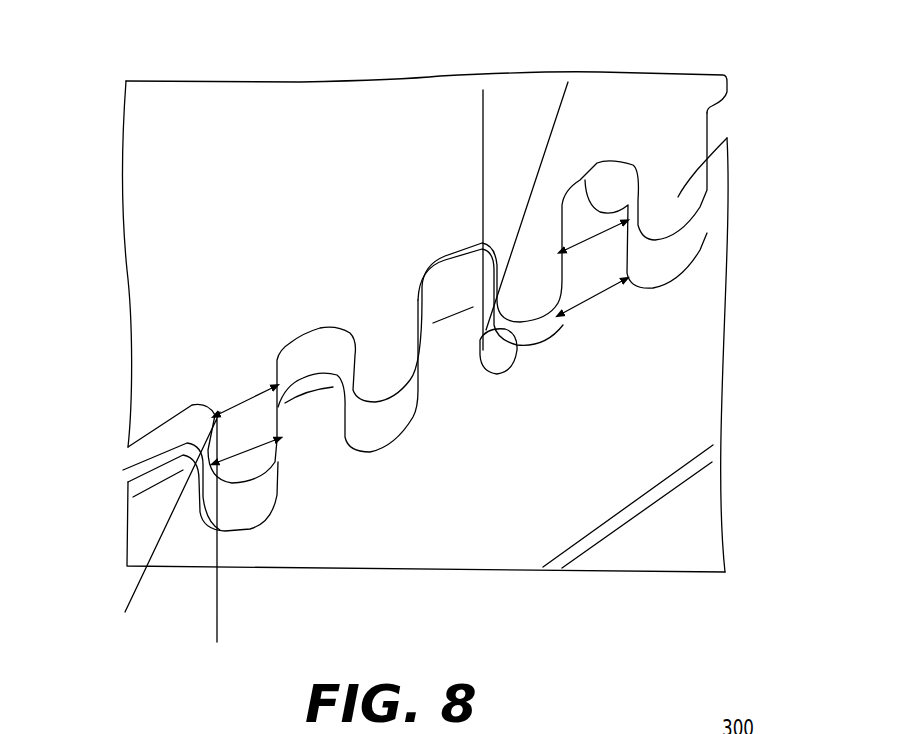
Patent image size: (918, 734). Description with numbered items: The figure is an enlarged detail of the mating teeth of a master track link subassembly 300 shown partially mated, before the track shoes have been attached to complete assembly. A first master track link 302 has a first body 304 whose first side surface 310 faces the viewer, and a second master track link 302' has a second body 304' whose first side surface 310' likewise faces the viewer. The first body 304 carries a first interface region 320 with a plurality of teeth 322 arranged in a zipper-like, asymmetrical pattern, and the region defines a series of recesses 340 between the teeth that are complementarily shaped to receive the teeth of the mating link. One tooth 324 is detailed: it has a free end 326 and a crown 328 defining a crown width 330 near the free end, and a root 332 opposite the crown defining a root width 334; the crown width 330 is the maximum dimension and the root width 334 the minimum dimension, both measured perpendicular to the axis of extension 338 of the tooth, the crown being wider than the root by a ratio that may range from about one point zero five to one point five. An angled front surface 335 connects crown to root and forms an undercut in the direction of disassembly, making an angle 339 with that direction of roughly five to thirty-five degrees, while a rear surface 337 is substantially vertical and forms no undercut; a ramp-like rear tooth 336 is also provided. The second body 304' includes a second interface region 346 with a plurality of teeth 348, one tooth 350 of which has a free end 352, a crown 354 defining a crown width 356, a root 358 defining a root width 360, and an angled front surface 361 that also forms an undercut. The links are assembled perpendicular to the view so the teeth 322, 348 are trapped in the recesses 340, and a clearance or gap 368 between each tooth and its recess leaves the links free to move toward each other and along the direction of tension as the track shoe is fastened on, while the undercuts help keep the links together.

The master track link subassembly 300 is at (471, 57).
The first master track link 302 is at (252, 226).
The first body 304 is at (426, 291).
The first side surface 310 is at (351, 164).
The first side surface 310' is at (628, 506).
The first interface region 320 is at (122, 186).
The plurality of teeth 322 is at (413, 333).
The tooth 324 is at (218, 410).
The free end 326 is at (230, 482).
The crown 328 is at (278, 495).
The crown width 330 is at (247, 465).
The root 332 is at (291, 343).
The root width 334 is at (278, 410).
The angled front surface 335 is at (123, 470).
The rear tooth 336 is at (137, 508).
The rear surface 337 is at (278, 410).
The axis of extension 338 is at (273, 485).
The angle 339 is at (488, 118).
The recesses 340 is at (333, 344).
The second interface region 346 is at (724, 440).
The plurality of teeth 348 is at (727, 192).
The tooth 350 is at (620, 222).
The free end 352 is at (607, 157).
The crown 354 is at (627, 163).
The crown width 356 is at (678, 197).
The root 358 is at (580, 310).
The root width 360 is at (603, 295).
The angled front surface 361 is at (516, 347).
The clearance or gap 368 is at (695, 247).
The second master track link 302' is at (457, 608).
The second body 304' is at (536, 604).